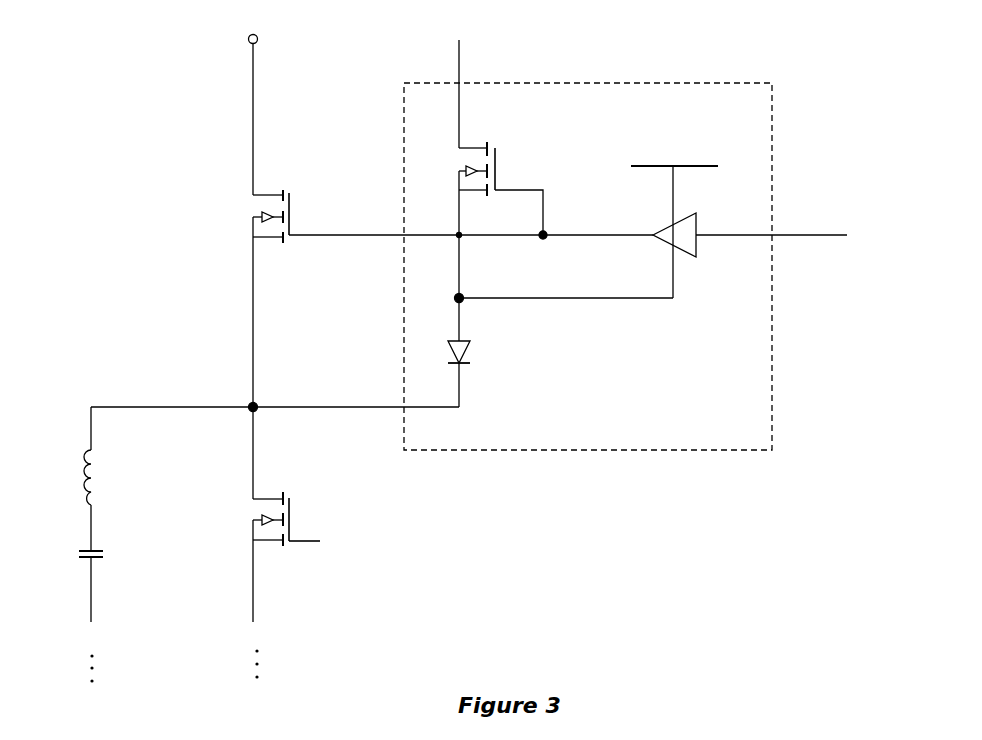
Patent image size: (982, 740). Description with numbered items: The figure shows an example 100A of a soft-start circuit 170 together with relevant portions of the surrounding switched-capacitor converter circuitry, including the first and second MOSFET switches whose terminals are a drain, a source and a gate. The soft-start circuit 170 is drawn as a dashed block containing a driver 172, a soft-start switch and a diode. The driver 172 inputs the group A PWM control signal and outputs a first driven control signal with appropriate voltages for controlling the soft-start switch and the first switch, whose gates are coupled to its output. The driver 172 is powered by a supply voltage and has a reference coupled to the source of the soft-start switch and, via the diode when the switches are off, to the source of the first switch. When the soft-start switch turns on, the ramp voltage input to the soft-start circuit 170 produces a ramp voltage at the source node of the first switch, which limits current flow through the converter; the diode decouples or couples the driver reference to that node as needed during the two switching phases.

The example of a soft-start circuit 100A is at (79, 39).
The soft-start circuit 170 is at (653, 231).
The driver 172 is at (767, 222).